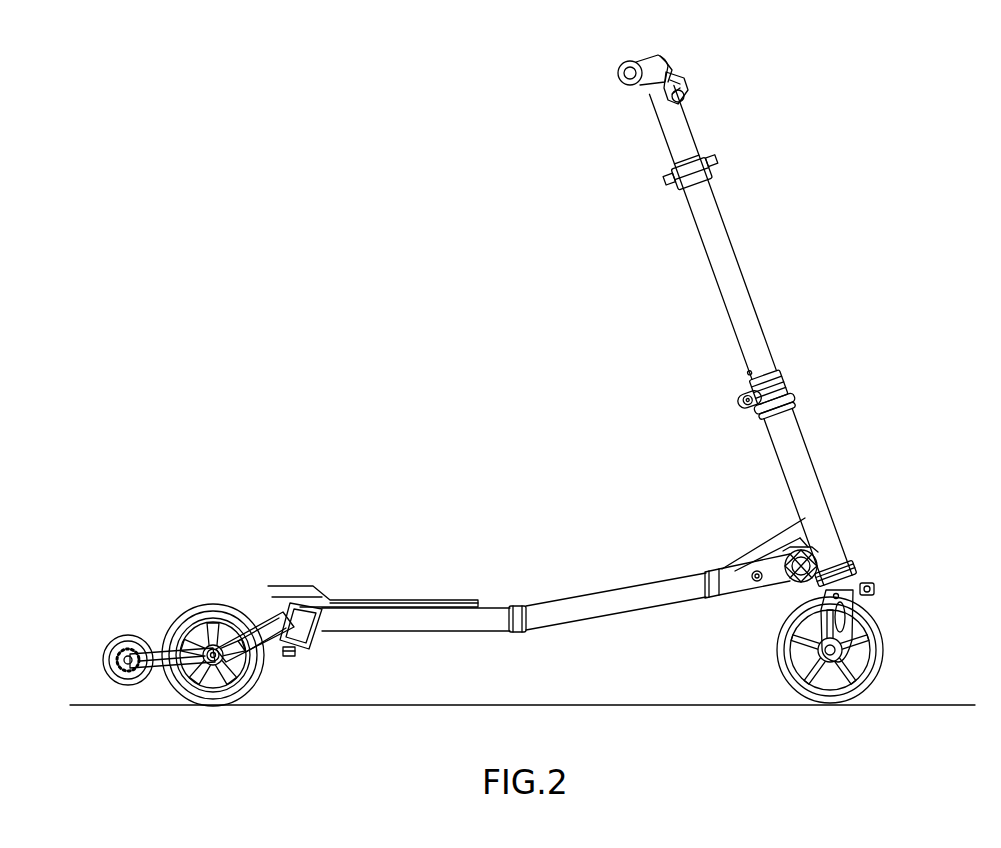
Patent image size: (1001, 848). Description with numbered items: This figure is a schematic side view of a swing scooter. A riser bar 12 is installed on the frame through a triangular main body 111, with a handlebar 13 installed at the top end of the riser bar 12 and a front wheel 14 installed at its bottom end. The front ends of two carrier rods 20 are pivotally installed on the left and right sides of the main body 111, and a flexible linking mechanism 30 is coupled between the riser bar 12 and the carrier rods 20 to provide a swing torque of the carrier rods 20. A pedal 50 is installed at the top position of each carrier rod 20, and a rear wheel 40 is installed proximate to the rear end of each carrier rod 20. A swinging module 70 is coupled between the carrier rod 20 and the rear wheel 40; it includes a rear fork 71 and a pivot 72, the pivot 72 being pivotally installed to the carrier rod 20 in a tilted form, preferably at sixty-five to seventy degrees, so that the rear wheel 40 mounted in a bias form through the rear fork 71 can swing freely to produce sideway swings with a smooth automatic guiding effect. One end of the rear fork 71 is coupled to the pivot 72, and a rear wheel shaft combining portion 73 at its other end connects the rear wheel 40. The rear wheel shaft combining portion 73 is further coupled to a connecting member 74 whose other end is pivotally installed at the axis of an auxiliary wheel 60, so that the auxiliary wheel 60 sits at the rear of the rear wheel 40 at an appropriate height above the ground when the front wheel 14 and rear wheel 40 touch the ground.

The riser bar 12 is at (742, 305).
The handlebar 13 is at (660, 72).
The front wheel 14 is at (881, 640).
The carrier rod 20 is at (604, 600).
The flexible linking mechanism 30 is at (820, 535).
The rear wheel 40 is at (188, 612).
The pedal 50 is at (392, 598).
The auxiliary wheel 60 is at (110, 652).
The swinging module 70 is at (276, 497).
The rear fork 71 is at (228, 617).
The pivot 72 is at (295, 617).
The rear wheel shaft combining portion 73 is at (216, 690).
The connecting member 74 is at (178, 676).
The main body 111 is at (792, 545).